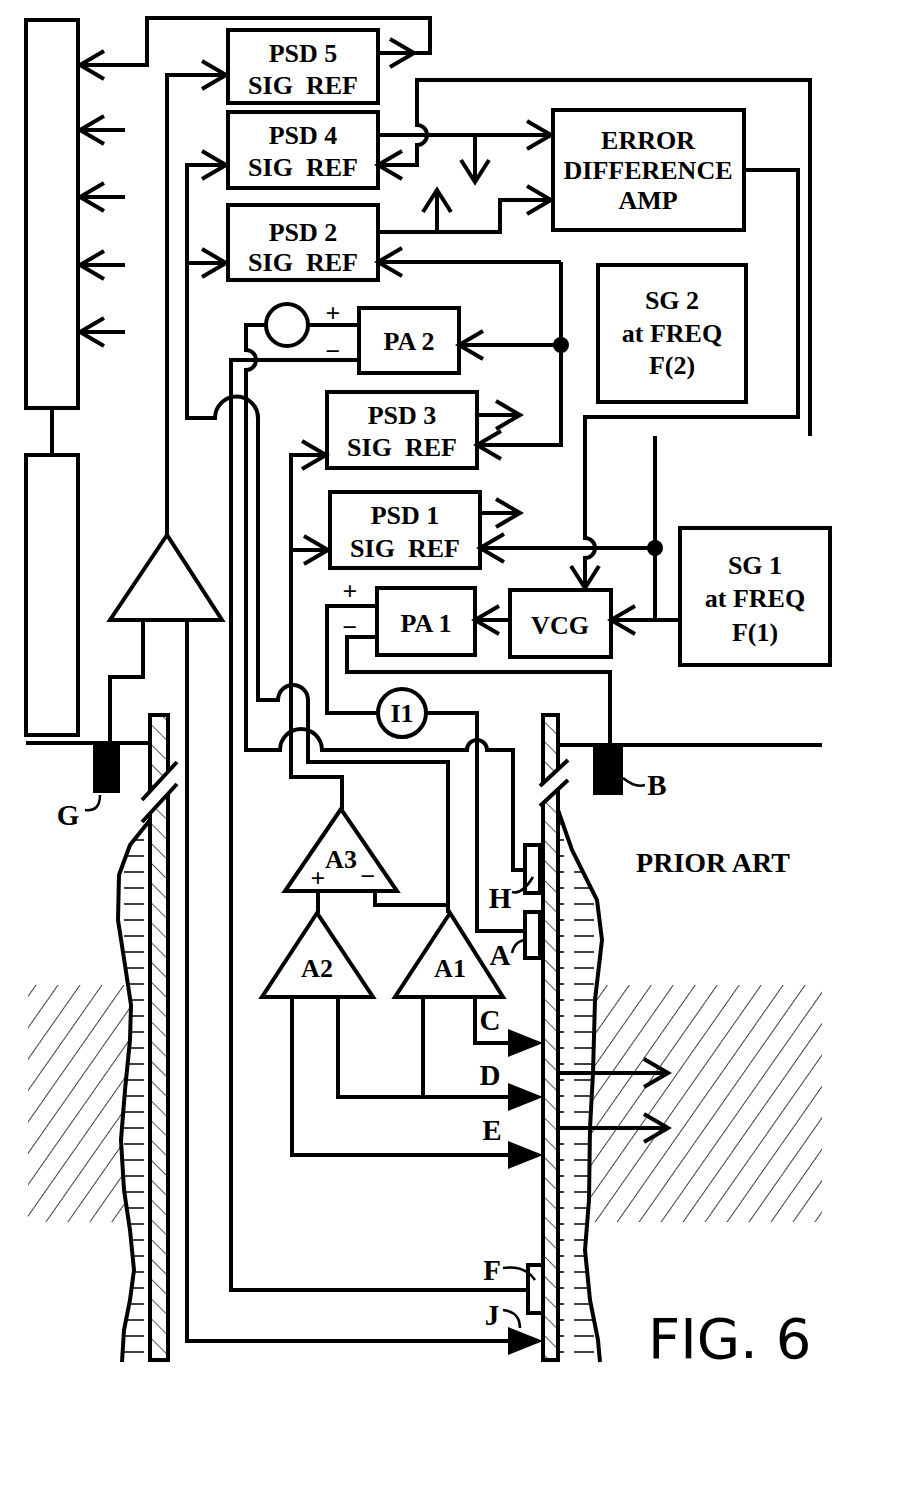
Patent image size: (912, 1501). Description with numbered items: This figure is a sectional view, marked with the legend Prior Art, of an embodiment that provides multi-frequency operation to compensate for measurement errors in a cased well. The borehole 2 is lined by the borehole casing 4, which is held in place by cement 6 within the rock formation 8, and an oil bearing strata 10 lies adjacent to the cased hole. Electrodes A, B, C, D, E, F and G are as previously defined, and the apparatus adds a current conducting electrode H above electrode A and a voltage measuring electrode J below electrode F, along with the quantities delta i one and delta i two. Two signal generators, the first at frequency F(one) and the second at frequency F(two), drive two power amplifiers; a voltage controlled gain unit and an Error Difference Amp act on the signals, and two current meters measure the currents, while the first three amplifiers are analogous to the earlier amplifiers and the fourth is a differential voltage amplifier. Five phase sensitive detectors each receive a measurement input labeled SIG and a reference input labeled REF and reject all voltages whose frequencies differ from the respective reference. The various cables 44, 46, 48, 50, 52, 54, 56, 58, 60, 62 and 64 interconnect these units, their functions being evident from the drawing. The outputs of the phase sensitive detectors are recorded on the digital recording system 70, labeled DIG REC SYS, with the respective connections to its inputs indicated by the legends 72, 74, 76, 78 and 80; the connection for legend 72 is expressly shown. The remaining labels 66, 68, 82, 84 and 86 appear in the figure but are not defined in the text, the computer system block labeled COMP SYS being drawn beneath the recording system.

The borehole 2 is at (395, 1195).
The borehole casing 4 is at (548, 1185).
The cement 6 is at (578, 920).
The rock formation 8 is at (672, 1256).
The oil bearing strata 10 is at (668, 1200).
The cable 44 is at (477, 730).
The cable 46 is at (612, 712).
The cable 48 is at (287, 763).
The cable 50 is at (250, 323).
The cable 52 is at (226, 472).
The cable 54 is at (448, 850).
The cable 56 is at (530, 198).
The cable 58 is at (530, 134).
The cable 60 is at (798, 262).
The cable 62 is at (645, 623).
The cable 64 is at (168, 483).
The SG1 reference signal line 66 is at (650, 546).
The SG2 reference signal line 68 is at (555, 342).
The digital recording system 70 is at (78, 378).
The connection legend 72 is at (114, 63).
The connection legend 74 is at (317, 322).
The connection legend 76 is at (317, 305).
The connection legend 78 is at (265, 218).
The connection legend 80 is at (285, 241).
The amplifier A2 output to A3 82 is at (310, 907).
The computer system 84 is at (78, 498).
The connection between recorder and computer 86 is at (52, 425).